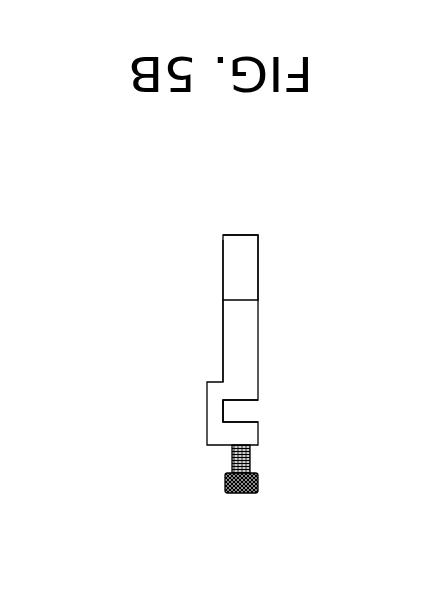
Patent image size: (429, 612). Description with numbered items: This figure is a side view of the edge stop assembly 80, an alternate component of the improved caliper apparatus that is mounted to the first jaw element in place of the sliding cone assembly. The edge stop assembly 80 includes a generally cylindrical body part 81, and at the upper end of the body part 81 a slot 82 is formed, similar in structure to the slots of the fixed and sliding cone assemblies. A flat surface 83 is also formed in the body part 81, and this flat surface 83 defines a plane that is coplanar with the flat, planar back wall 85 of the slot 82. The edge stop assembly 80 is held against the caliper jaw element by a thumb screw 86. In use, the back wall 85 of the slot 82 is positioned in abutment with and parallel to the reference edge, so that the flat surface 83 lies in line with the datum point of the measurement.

The edge stop assembly 80 is at (268, 285).
The body part 81 is at (240, 262).
The slot 82 is at (250, 415).
The flat surface 83 is at (223, 327).
The back wall 85 is at (223, 411).
The thumb screw 86 is at (230, 495).